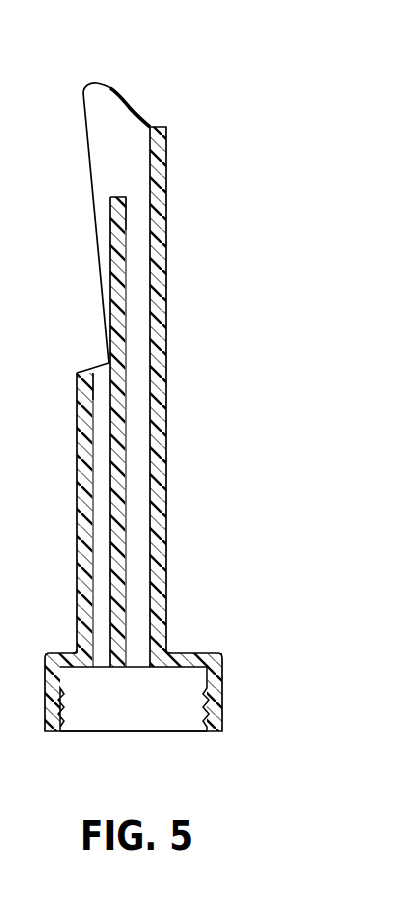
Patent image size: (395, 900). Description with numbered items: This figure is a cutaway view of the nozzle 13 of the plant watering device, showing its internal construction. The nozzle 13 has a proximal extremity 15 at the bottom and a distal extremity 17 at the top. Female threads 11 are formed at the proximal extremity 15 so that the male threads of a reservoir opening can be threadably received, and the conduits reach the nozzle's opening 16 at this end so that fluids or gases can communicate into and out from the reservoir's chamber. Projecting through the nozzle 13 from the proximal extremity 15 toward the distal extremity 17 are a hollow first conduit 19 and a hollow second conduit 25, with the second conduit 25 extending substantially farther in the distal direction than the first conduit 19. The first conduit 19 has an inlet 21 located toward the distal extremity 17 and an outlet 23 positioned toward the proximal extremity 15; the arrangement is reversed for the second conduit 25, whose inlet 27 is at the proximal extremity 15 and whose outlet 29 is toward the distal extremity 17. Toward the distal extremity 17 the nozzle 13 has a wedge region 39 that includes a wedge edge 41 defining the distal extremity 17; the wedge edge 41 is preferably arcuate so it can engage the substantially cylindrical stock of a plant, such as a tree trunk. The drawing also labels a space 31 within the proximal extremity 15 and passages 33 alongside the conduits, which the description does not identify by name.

The female threads 11 is at (70, 707).
The nozzle 13 is at (187, 405).
The proximal extremity 15 is at (217, 730).
The nozzle opening 16 is at (117, 727).
The distal extremity 17 is at (90, 86).
The first conduit 19 is at (98, 507).
The inlet of first conduit 21 is at (102, 363).
The outlet of first conduit 23 is at (78, 647).
The second conduit 25 is at (140, 516).
The inlet of second conduit 27 is at (163, 645).
The outlet of second conduit 29 is at (133, 192).
The cavity 31 is at (118, 667).
The channel 33 is at (138, 203).
The wedge region 39 is at (102, 150).
The wedge edge 41 is at (140, 113).